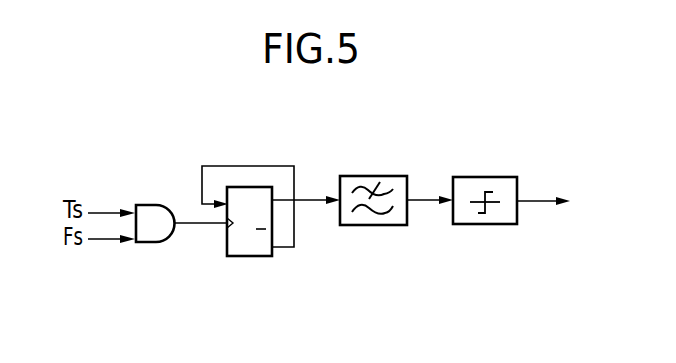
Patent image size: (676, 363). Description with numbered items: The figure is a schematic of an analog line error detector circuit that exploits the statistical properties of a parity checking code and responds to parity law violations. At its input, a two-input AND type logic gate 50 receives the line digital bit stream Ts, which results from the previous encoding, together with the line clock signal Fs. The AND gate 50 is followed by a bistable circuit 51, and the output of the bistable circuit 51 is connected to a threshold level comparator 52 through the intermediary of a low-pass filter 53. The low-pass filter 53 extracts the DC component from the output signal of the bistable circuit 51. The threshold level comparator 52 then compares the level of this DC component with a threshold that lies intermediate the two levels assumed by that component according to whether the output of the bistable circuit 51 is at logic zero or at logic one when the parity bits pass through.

The two-input AND type logic gate 50 is at (157, 228).
The bistable circuit 51 is at (245, 250).
The threshold level comparator 52 is at (472, 178).
The low-pass filter 53 is at (352, 178).